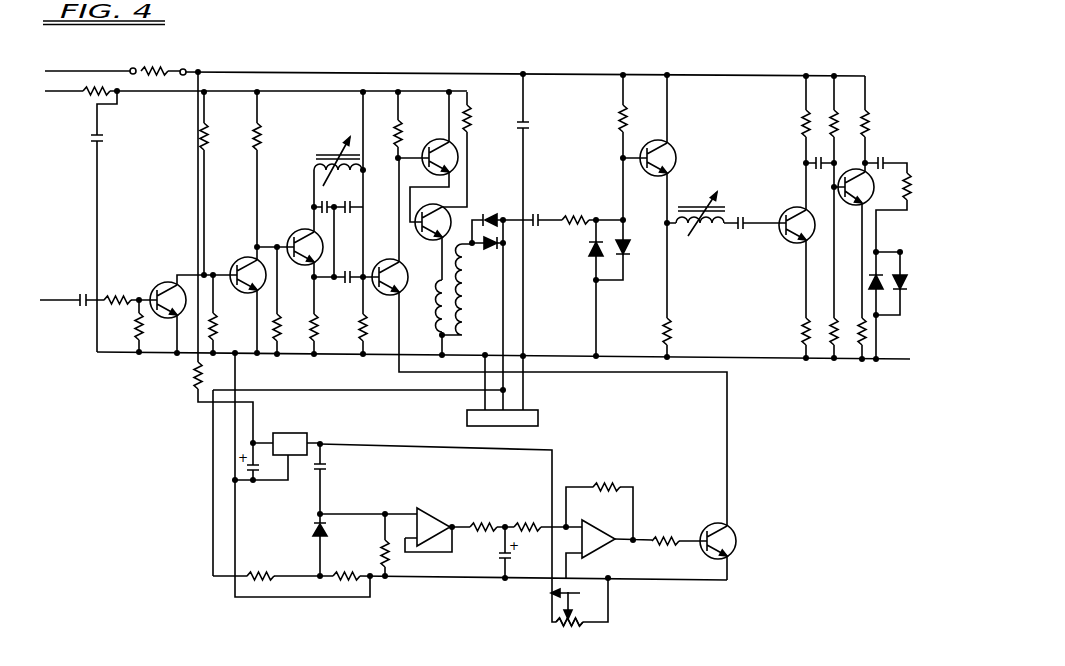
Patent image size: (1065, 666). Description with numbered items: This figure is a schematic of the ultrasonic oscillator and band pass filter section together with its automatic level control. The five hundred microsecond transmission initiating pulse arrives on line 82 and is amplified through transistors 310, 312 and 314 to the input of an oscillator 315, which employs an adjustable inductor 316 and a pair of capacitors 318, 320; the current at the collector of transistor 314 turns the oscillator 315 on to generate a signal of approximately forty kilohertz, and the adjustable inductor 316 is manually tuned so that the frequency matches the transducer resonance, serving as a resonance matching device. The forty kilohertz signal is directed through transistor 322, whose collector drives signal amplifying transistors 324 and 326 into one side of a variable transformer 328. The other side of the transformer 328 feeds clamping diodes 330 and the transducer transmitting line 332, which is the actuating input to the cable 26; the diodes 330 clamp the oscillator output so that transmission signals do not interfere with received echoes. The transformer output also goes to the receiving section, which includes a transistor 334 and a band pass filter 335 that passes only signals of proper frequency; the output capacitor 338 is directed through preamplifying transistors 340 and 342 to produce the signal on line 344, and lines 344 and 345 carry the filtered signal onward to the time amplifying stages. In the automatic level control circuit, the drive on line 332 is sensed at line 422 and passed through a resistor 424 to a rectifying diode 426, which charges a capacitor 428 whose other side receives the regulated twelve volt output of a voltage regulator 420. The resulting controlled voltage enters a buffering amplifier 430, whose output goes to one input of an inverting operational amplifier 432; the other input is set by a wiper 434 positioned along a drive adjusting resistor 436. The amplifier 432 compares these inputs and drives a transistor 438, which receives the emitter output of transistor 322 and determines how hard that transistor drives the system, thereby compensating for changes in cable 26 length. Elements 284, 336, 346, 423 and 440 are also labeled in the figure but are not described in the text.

The cable 26 is at (540, 421).
The line 82 is at (78, 300).
The supply conductor 284 is at (88, 71).
The transistor 310 is at (163, 283).
The transistor 312 is at (240, 256).
The transistor 314 is at (316, 294).
The oscillator 315 is at (326, 133).
The adjustable inductor 316 is at (312, 168).
The capacitor 318 is at (303, 229).
The capacitor 320 is at (352, 212).
The transistor 322 is at (389, 259).
The signal amplifying transistor 324 is at (437, 140).
The signal amplifying transistor 326 is at (447, 198).
The variable transformer 328 is at (438, 304).
The clamping diodes 330 is at (490, 214).
The transducer transmitting line 332 is at (500, 300).
The transistor 334 is at (672, 148).
The band pass filter 335 is at (728, 174).
The inductor 336 is at (712, 235).
The output capacitor 338 is at (743, 234).
The preamplifying transistor 340 is at (803, 208).
The preamplifying transistor 342 is at (858, 168).
The line 344 is at (897, 248).
The line 345 is at (893, 361).
The conductor 346 is at (522, 384).
The voltage regulator 420 is at (283, 429).
The line 422 is at (357, 392).
The conductor 423 is at (238, 364).
The resistor 424 is at (350, 575).
The rectifying diode 426 is at (313, 530).
The capacitor 428 is at (325, 474).
The buffering amplifier 430 is at (428, 513).
The inverting operational amplifier 432 is at (603, 551).
The wiper 434 is at (550, 605).
The drive adjusting resistor 436 is at (575, 630).
The transistor 438 is at (734, 531).
The conductor 440 is at (485, 383).